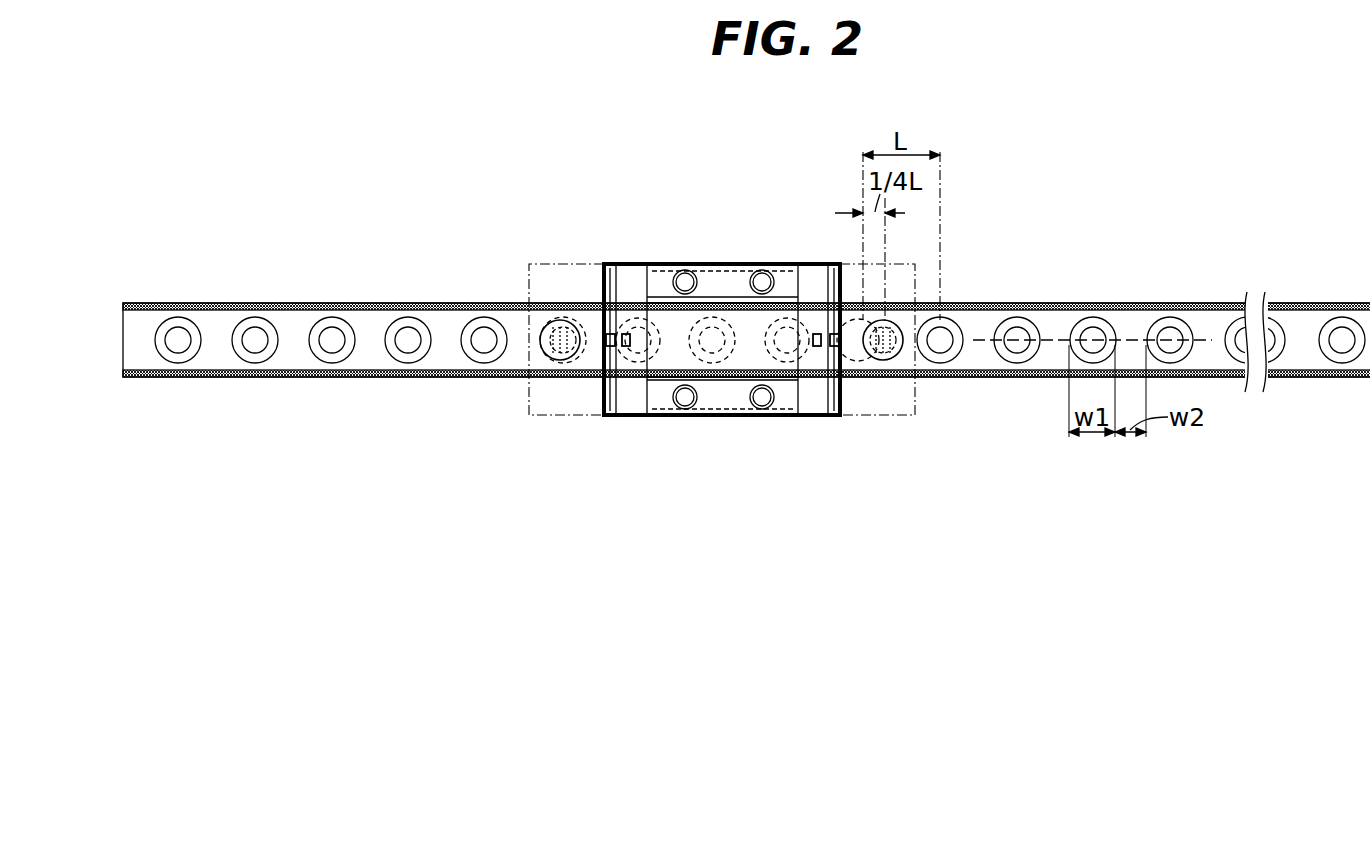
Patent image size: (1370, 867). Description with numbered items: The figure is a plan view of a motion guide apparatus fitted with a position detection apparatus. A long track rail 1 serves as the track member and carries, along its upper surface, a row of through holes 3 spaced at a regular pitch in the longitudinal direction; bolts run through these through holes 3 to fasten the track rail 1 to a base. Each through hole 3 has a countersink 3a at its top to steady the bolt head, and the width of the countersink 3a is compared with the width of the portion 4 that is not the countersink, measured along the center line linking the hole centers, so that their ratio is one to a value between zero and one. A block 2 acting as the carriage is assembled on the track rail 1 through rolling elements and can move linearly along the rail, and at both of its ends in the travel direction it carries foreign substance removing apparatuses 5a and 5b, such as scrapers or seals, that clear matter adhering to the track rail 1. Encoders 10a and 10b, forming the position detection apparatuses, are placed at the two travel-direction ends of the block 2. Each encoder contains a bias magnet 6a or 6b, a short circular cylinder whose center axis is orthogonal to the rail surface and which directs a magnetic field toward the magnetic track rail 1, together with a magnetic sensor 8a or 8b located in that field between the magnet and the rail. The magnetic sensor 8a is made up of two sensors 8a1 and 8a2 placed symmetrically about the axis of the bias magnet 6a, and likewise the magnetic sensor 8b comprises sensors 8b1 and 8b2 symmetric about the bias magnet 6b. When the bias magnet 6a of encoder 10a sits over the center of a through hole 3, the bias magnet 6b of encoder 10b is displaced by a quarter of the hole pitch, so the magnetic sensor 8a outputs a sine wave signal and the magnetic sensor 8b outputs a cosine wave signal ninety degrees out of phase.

The track rail 1 is at (367, 323).
The block 2 is at (720, 278).
The through hole 3 is at (416, 330).
The countersink 3a is at (1098, 320).
The portion that is not the countersink 4 is at (1130, 340).
The foreign substance removing apparatus 5a is at (608, 280).
The foreign substance removing apparatus 5b is at (838, 300).
The bias magnet 6a is at (562, 318).
The bias magnet 6b is at (905, 355).
The magnetic sensor 8a is at (554, 416).
The magnetic sensor 8a1 is at (548, 348).
The magnetic sensor 8a2 is at (576, 352).
The magnetic sensor 8b is at (878, 417).
The magnetic sensor 8b1 is at (870, 352).
The magnetic sensor 8b2 is at (898, 355).
The encoder 10a is at (542, 275).
The encoder 10b is at (897, 282).